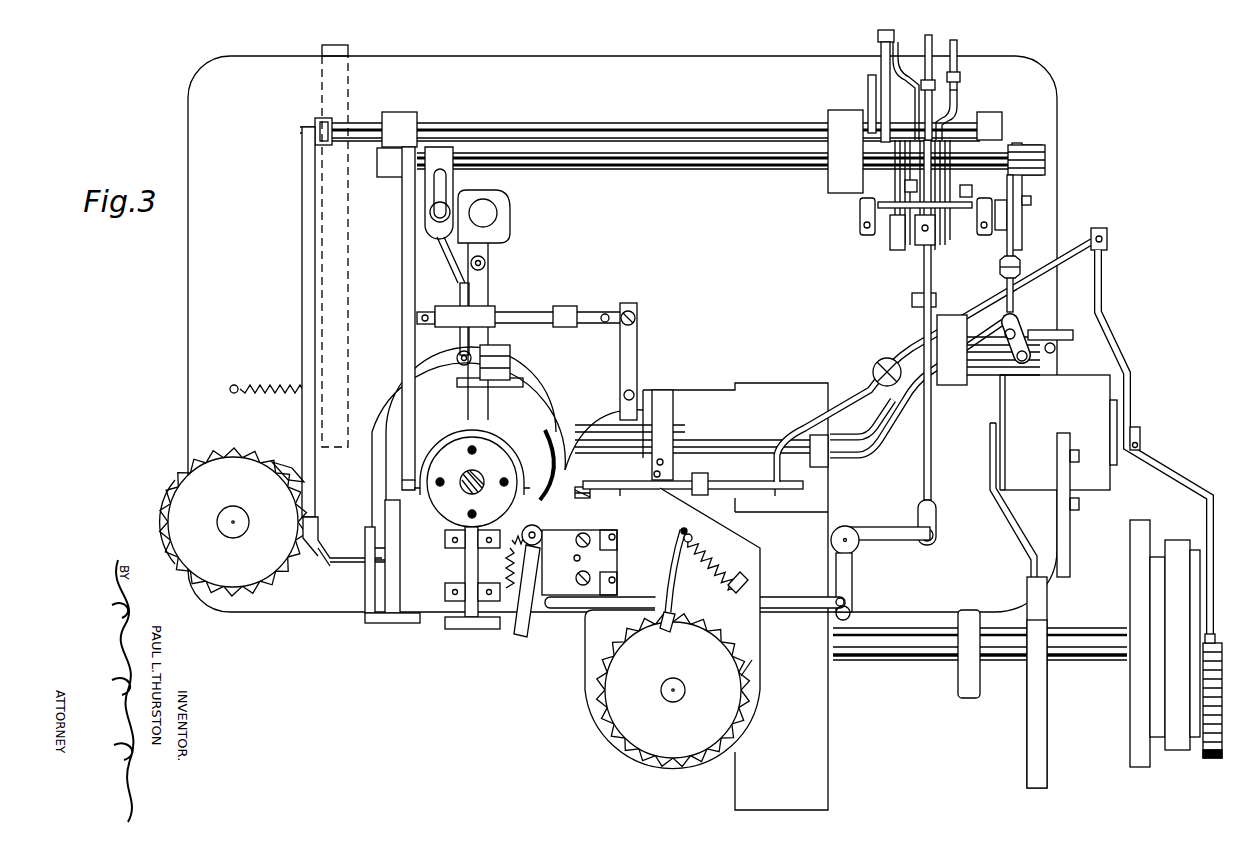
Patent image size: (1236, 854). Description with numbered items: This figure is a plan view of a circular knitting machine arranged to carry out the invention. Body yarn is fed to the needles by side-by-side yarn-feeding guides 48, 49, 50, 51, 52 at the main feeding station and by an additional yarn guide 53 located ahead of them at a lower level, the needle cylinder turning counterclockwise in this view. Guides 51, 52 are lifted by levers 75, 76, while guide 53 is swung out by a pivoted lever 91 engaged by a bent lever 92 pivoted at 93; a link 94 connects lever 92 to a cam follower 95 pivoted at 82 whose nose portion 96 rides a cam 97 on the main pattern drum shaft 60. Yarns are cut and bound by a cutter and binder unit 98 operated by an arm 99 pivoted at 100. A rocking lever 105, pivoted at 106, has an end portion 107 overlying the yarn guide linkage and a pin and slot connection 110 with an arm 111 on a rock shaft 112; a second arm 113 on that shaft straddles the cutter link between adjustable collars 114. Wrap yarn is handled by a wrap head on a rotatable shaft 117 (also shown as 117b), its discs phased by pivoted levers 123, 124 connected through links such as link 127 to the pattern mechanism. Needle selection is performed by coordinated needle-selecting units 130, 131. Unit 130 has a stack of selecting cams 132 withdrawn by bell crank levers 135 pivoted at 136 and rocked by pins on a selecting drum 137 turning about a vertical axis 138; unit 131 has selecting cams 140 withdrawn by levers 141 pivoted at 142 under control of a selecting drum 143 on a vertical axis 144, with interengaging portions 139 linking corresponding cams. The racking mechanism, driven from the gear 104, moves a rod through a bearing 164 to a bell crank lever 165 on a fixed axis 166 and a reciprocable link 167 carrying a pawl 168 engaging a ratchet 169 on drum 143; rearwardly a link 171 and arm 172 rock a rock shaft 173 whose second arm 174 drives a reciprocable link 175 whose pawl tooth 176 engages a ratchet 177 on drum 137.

The gear 104 is at (348, 50).
The second arm 174 is at (318, 127).
The reciprocable link 175 is at (302, 256).
The rock shaft 173 is at (640, 123).
The rock shaft 112 is at (690, 165).
The second arm 113 is at (440, 150).
The link 127 is at (400, 172).
The pivoted lever 123 is at (402, 290).
The adjustable collars 114 is at (453, 185).
The rotatable shaft 117 is at (497, 213).
The arm 99 is at (455, 268).
The pivot 100 is at (460, 293).
The cutter and binder unit 98 is at (500, 362).
The pivoted lever 124 is at (500, 440).
The drum shaft 117b is at (478, 475).
The selecting drum 137 is at (222, 456).
The vertical axis 138 is at (233, 508).
The needle-selecting unit 130 is at (168, 500).
The ratchet 177 is at (285, 470).
The pawl tooth 176 is at (300, 523).
The pivot 136 is at (322, 565).
The bell crank levers 135 is at (356, 562).
The selecting cams 132 is at (380, 503).
The interengaging portions 139 is at (445, 545).
The selecting cams 140 is at (490, 575).
The pivot 142 is at (575, 560).
The levers 141 is at (636, 545).
The yarn-feeding guide 53 is at (583, 497).
The pivoted lever 91 is at (785, 490).
The yarn-feeding guide 48 is at (680, 425).
The yarn-feeding guide 49 is at (683, 440).
The yarn-feeding guide 50 is at (685, 447).
The yarn-feeding guide 51 is at (690, 453).
The yarn-feeding guide 52 is at (673, 455).
The bent lever 92 is at (790, 428).
The lever 75 is at (887, 438).
The lever 76 is at (870, 425).
The pivot 93 is at (887, 358).
The link 94 is at (1107, 248).
The cam follower 95 is at (1131, 372).
The pivot 82 is at (1140, 433).
The main pattern drum shaft 60 is at (1092, 660).
The nose portion 96 is at (1212, 637).
The cam 97 is at (1210, 758).
The bearing 164 is at (912, 300).
The bell crank lever 165 is at (905, 540).
The fixed axis 166 is at (845, 526).
The reciprocable link 167 is at (775, 596).
The needle-selecting unit 131 is at (600, 718).
The selecting drum 143 is at (737, 720).
The vertical axis 144 is at (680, 682).
The ratchet 169 is at (752, 672).
The pawl 168 is at (672, 620).
The link 171 is at (880, 60).
The arm 172 is at (868, 100).
The arm 111 is at (1022, 190).
The pin and slot connection 110 is at (1031, 200).
The rocking lever 105 is at (1013, 237).
The pivot 106 is at (1000, 267).
The end portion 107 is at (1018, 328).